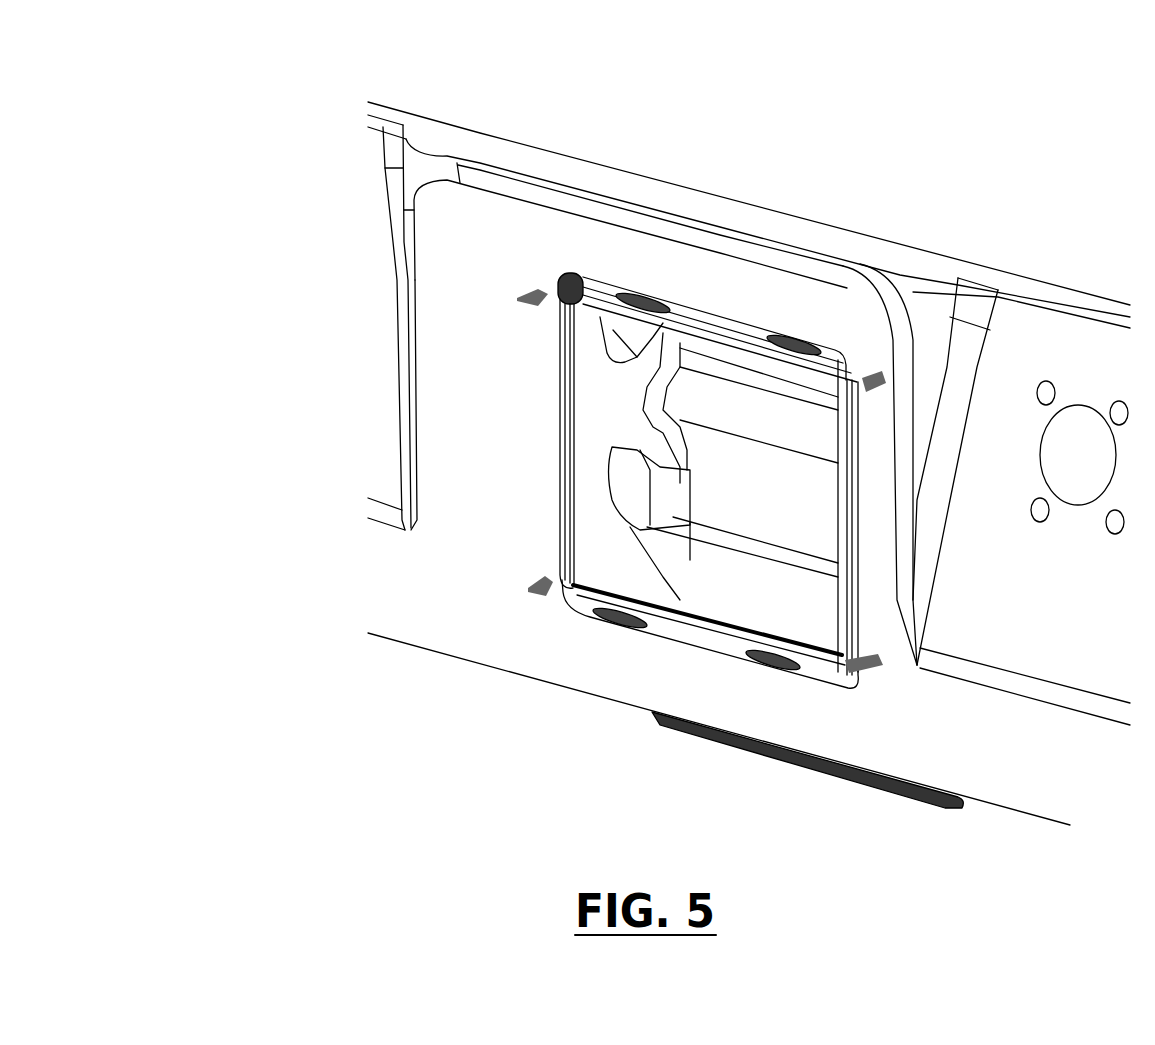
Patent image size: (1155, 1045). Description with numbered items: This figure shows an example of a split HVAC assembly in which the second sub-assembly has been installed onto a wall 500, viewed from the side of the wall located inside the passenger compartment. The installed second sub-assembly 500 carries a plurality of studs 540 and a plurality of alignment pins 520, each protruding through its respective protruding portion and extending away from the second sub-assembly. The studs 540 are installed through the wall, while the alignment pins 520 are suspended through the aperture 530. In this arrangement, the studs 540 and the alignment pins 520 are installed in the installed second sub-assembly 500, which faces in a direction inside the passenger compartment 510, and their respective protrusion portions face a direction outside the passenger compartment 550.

The wall 500 is at (220, 39).
The direction inside the passenger compartment 510 is at (900, 76).
The plurality of alignment pins 520 is at (812, 352).
The aperture 530 is at (580, 412).
The plurality of studs 540 is at (485, 592).
The direction outside the passenger compartment 550 is at (443, 838).